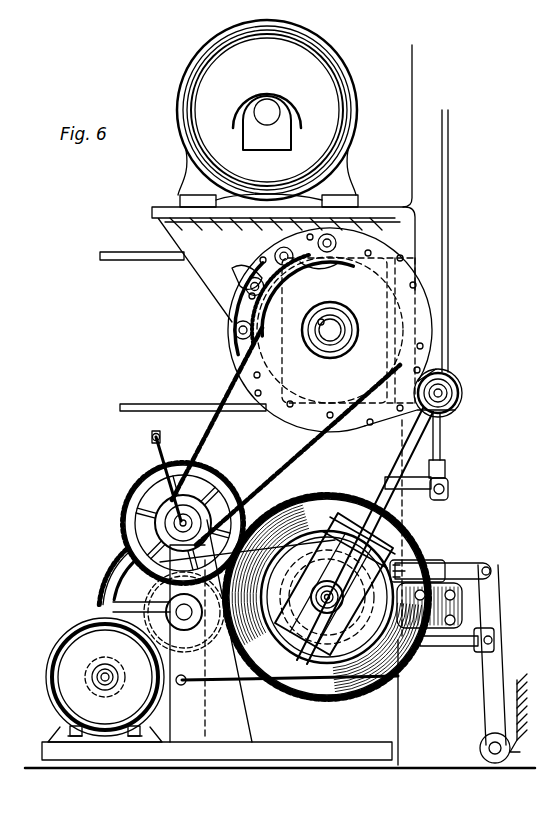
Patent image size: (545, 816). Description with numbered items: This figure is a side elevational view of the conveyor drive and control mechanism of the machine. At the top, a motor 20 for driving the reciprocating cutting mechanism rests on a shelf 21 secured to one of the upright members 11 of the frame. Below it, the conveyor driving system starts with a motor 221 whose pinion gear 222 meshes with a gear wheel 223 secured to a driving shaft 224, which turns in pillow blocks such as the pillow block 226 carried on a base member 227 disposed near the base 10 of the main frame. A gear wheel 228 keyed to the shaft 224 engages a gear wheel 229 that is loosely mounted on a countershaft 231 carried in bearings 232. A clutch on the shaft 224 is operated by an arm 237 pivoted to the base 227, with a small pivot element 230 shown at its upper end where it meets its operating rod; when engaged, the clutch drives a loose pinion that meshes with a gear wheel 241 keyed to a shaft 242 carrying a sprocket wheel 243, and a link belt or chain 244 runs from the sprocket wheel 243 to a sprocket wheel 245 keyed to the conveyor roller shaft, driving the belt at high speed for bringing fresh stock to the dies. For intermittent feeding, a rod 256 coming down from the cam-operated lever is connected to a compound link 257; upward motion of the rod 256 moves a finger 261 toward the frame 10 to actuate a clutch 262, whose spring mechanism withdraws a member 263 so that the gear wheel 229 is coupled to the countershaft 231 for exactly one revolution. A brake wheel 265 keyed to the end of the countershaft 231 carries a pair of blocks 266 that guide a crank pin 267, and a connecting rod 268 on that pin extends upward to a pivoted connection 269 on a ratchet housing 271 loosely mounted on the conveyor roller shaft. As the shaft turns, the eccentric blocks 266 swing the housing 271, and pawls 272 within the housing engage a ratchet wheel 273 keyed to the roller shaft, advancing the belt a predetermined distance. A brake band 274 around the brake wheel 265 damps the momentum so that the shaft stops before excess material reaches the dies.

The base 10 is at (512, 718).
The upright member 11 is at (406, 96).
The motor 20 is at (178, 97).
The shelf 21 is at (272, 253).
The motor 221 is at (49, 681).
The pinion gear 222 is at (85, 670).
The gear wheel 223 is at (100, 590).
The driving shaft 224 is at (177, 612).
The pillow block 226 is at (226, 720).
The base member 227 is at (48, 745).
The gear wheel 228 is at (172, 622).
The gear wheel 229 is at (323, 497).
The pivot pin 230 is at (152, 437).
The countershaft 231 is at (334, 589).
The bearings 232 is at (398, 727).
The arm 237 is at (160, 452).
The gear wheel 241 is at (135, 492).
The shaft 242 is at (165, 525).
The sprocket wheel 243 is at (140, 507).
The link belt or chain 244 is at (283, 476).
The sprocket wheel 245 is at (330, 344).
The rod 256 is at (441, 311).
The compound link 257 is at (491, 561).
The finger 261 is at (442, 648).
The clutch 262 is at (442, 583).
The member 263 is at (416, 562).
The brake wheel 265 is at (263, 597).
The blocks 266 is at (342, 528).
The crank pin 267 is at (300, 598).
The connecting rod 268 is at (405, 450).
The pivoted connection 269 is at (455, 403).
The ratchet housing 271 is at (232, 362).
The pawls 272 is at (243, 270).
The ratchet wheel 273 is at (231, 318).
The brake band 274 is at (256, 682).